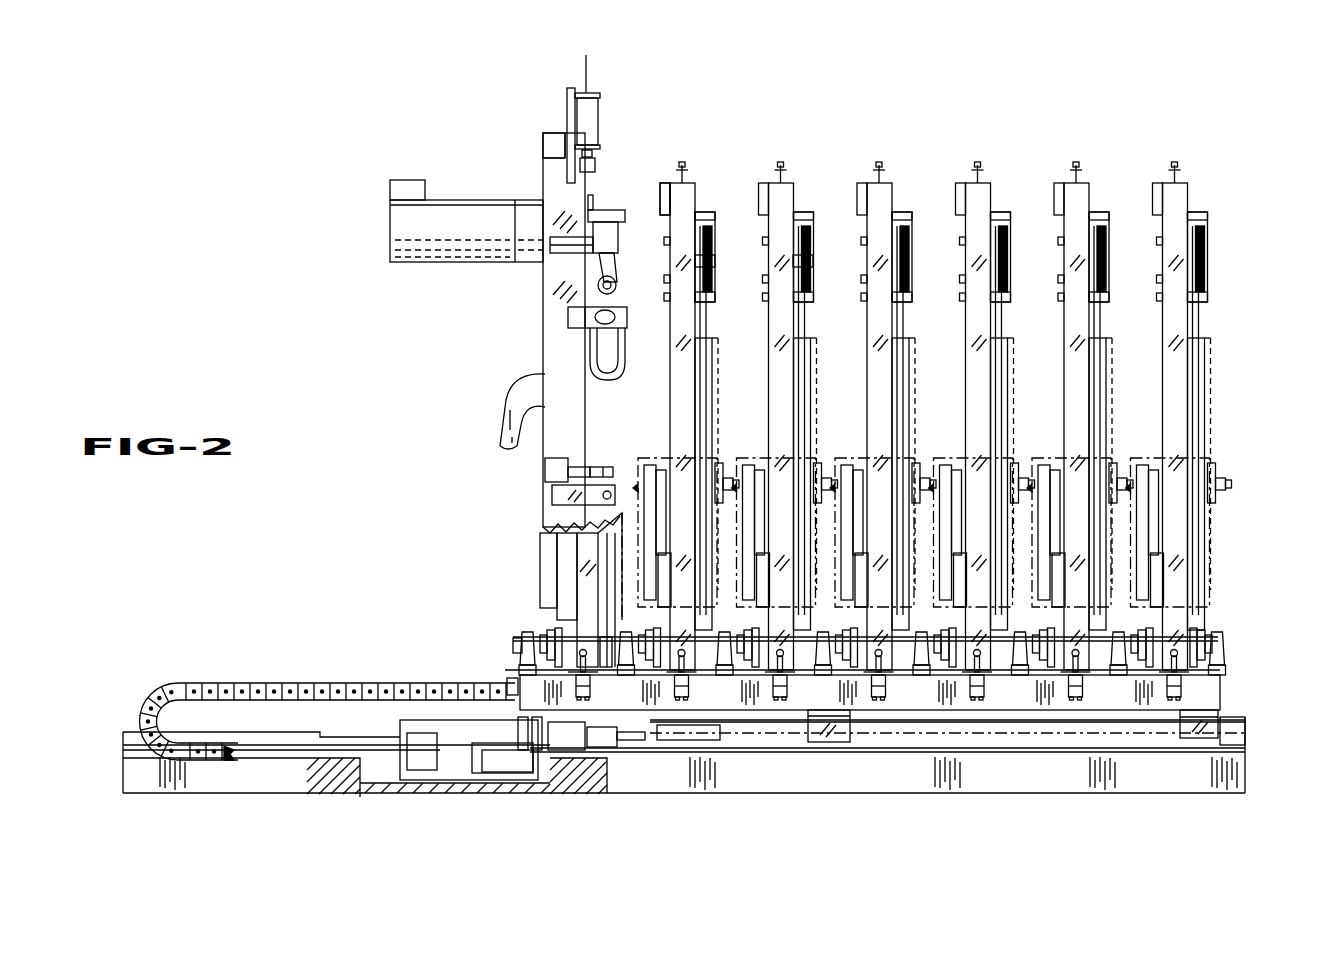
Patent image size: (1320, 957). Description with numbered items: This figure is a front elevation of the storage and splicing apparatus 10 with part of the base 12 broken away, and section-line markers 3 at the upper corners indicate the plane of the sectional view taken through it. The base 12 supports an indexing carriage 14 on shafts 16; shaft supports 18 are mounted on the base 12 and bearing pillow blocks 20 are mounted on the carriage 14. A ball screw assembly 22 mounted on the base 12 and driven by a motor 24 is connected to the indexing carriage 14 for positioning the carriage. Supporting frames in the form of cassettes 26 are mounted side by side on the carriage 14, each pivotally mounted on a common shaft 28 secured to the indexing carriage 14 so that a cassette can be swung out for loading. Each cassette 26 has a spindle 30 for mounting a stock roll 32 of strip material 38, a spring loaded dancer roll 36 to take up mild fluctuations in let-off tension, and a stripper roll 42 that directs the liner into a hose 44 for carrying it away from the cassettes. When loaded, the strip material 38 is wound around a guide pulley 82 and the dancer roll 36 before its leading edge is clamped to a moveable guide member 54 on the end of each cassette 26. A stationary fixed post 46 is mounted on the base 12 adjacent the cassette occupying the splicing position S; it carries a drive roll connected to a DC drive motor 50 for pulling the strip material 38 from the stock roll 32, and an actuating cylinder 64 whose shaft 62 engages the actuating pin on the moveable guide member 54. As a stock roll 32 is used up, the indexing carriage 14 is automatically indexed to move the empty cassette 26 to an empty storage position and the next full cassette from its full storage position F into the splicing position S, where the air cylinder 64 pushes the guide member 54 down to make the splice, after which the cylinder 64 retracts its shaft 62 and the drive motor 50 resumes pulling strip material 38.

The section line 3- 3 is at (262, 40).
The storage and splicing apparatus 10 is at (665, 103).
The base 12 is at (1233, 766).
The indexing carriage 14 is at (1207, 690).
The shafts 16 is at (975, 728).
The shaft supports 18 is at (1048, 740).
The bearing pillow blocks 20 is at (826, 745).
The ball screw assembly 22 is at (565, 735).
The motor 24 is at (455, 755).
The cassettes 26 is at (586, 583).
The common shaft 28 is at (1120, 628).
The spindle 30 is at (708, 490).
The stock roll 32 is at (803, 390).
The spring loaded dancer roll 36 is at (794, 240).
The strip material 38 is at (805, 333).
The stripper roll 42 is at (798, 292).
The hose 44 is at (504, 408).
The fixed post 46 is at (553, 176).
The DC drive motor 50 is at (399, 236).
The moveable guide member 54 is at (803, 215).
The shaft 62 is at (597, 163).
The actuating cylinder 64 is at (596, 116).
The guide pulley 82 is at (794, 266).
The full storage position F is at (688, 184).
The splicing position S is at (556, 138).